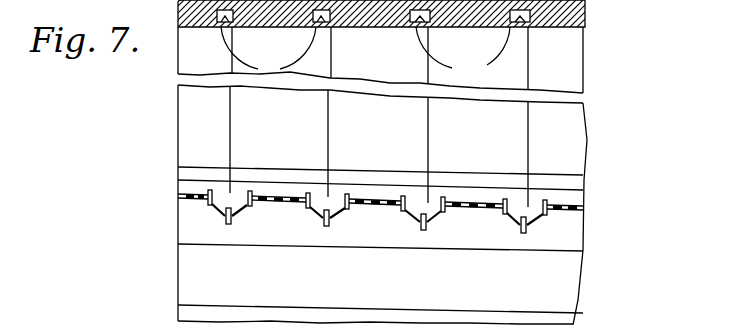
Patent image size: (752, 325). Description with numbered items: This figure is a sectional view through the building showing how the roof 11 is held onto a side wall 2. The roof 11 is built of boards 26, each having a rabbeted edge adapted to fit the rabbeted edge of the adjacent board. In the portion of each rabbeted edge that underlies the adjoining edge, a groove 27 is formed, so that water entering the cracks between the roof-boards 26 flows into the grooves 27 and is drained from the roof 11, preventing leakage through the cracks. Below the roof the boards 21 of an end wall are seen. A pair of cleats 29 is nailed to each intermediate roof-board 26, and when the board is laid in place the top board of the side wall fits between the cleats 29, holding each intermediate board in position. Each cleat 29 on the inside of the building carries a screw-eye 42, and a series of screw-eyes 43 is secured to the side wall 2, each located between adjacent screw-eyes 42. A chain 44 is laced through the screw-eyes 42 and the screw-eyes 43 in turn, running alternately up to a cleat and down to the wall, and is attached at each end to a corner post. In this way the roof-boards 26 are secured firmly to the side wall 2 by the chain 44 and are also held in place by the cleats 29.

The side wall 2 is at (380, 278).
The roof 11 is at (278, 15).
The boards of an end wall 21 is at (565, 278).
The board 26 is at (380, 147).
The groove 27 is at (365, 51).
The cleat 29 is at (195, 180).
The screw-eye 42 is at (211, 206).
The screw-eye 43 is at (226, 225).
The chain 44 is at (242, 208).